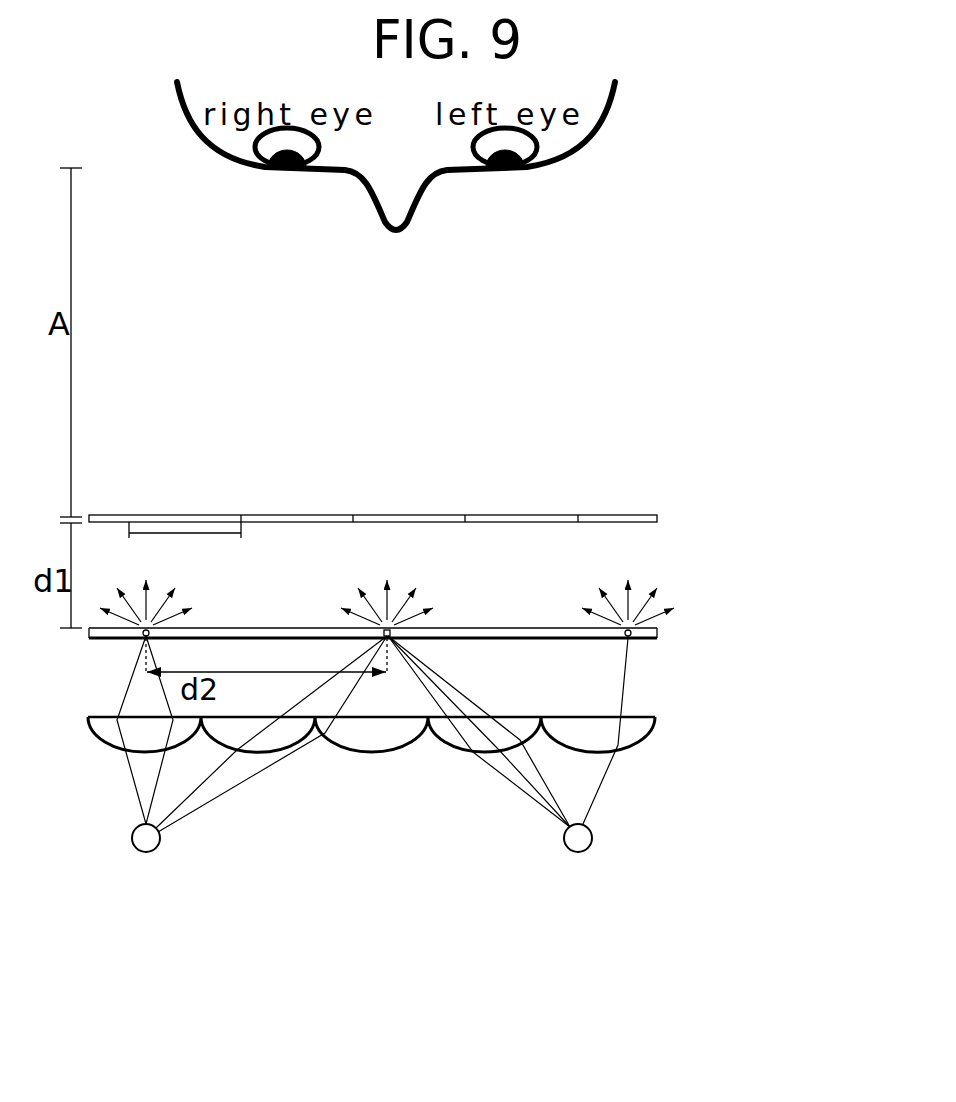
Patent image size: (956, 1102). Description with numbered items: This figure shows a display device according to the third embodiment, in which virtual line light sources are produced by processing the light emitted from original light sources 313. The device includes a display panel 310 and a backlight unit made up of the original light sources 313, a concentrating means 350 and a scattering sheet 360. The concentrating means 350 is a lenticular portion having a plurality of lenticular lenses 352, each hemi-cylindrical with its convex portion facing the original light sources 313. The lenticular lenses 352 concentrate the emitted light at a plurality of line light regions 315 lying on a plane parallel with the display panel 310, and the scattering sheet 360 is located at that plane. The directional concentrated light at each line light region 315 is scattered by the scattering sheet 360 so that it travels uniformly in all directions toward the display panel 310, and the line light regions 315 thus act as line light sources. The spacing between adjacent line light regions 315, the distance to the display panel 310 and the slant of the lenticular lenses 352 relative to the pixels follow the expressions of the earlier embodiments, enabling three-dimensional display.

The display panel 310 is at (641, 512).
The line light regions 315 is at (638, 629).
The scattering sheet 360 is at (658, 631).
The concentrating means 350 is at (470, 784).
The lenticular lens 352 is at (357, 733).
The original light sources 313 is at (146, 838).